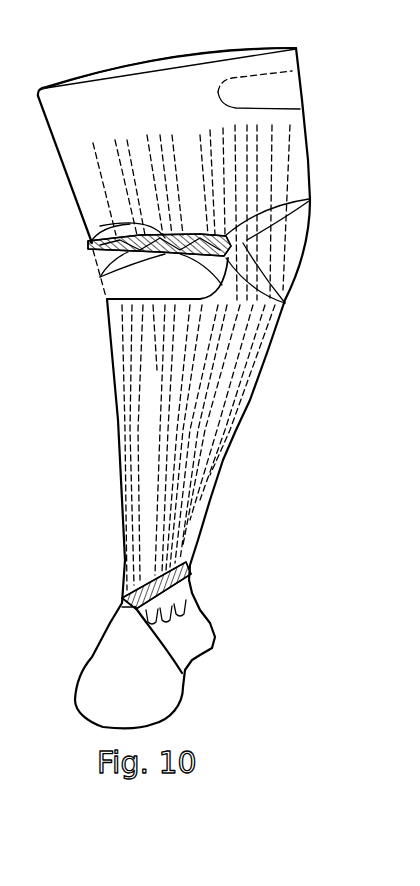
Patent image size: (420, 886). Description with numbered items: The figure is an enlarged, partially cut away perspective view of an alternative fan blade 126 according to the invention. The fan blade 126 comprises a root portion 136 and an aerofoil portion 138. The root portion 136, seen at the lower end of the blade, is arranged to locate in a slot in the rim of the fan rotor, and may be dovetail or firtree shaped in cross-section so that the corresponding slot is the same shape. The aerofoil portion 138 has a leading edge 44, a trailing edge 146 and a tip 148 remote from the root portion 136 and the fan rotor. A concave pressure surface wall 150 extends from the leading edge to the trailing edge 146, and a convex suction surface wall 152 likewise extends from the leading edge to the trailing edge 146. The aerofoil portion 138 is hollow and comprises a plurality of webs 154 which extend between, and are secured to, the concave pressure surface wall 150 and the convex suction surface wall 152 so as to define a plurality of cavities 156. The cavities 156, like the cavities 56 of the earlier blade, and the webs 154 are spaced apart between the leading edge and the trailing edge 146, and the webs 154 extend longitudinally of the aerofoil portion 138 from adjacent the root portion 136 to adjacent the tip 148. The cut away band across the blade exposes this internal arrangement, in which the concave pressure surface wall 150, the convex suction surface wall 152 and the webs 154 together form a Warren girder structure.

The leading edge 44 is at (305, 243).
The cavities 56 is at (285, 303).
The fan blade 126 is at (280, 352).
The root portion 136 is at (200, 632).
The aerofoil portion 138 is at (220, 466).
The trailing edge 146 is at (108, 330).
The tip 148 is at (250, 44).
The concave pressure surface wall 150 is at (300, 109).
The convex suction surface wall 152 is at (293, 72).
The webs 154 is at (309, 199).
The cavities 156 is at (100, 226).